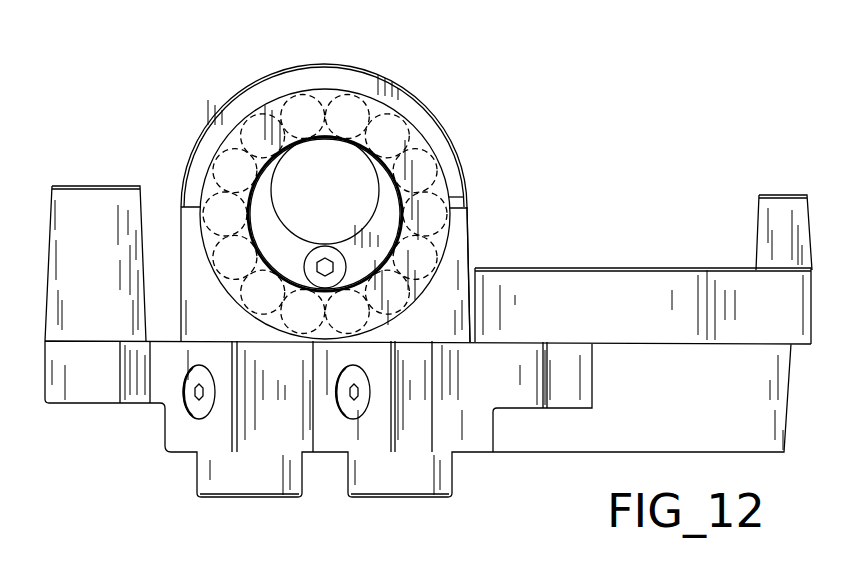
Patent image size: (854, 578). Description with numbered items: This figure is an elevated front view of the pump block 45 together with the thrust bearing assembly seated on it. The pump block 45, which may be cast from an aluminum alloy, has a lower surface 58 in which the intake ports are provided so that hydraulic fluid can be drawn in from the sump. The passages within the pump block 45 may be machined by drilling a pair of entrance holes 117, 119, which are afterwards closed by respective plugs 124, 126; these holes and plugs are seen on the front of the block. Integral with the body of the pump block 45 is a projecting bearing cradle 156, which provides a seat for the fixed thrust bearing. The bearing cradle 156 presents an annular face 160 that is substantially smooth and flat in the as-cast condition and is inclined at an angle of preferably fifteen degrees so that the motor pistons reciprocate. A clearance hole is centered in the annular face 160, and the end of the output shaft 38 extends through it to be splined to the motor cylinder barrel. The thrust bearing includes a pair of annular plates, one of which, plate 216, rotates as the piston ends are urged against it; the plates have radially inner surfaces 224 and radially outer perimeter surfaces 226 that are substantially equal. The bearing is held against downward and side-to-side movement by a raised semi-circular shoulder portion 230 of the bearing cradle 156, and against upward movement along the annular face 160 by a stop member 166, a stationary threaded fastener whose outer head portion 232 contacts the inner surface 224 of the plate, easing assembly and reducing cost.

The output shaft 38 is at (337, 160).
The pump block 45 is at (633, 283).
The lower surface 58 is at (533, 453).
The entrance hole 117 is at (362, 405).
The entrance hole 119 is at (182, 398).
The plug 124 is at (193, 410).
The plug 126 is at (347, 408).
The bearing cradle 156 is at (430, 127).
The annular face 160 is at (397, 93).
The stop member 166 is at (306, 250).
The annular plate 216 is at (238, 138).
The radially inner surface 224 is at (393, 187).
The radially outer perimeter surface 226 is at (452, 196).
The raised semi-circular shoulder portion 230 is at (457, 245).
The outer head portion 232 is at (338, 240).